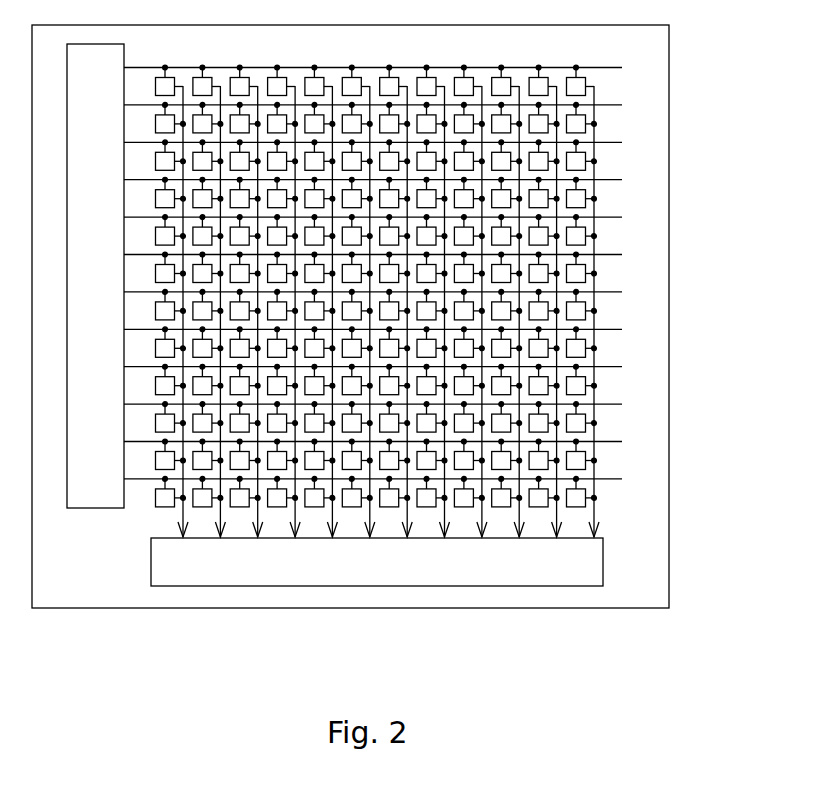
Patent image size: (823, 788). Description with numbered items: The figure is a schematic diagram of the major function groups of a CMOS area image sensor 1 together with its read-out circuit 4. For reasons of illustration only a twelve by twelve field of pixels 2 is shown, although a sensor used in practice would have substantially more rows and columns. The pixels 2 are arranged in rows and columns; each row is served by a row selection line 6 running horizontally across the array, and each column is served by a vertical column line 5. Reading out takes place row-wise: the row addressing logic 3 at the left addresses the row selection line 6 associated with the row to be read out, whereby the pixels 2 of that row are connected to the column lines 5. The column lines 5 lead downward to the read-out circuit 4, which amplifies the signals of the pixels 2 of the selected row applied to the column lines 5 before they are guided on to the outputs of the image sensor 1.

The image sensor 1 is at (645, 59).
The pixels 2 is at (585, 128).
The row addressing logic 3 is at (98, 288).
The read-out circuit 4 is at (382, 571).
The column lines 5 is at (599, 339).
The row selection line 6 is at (636, 180).